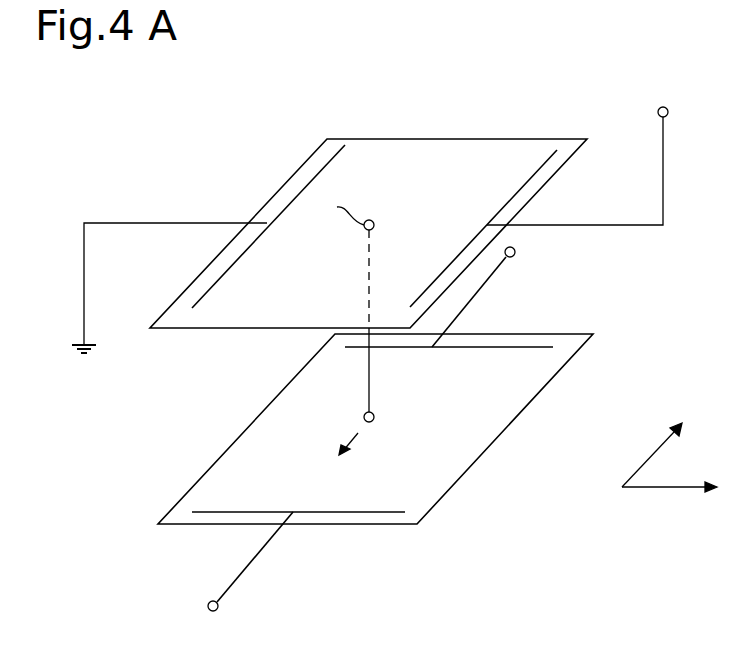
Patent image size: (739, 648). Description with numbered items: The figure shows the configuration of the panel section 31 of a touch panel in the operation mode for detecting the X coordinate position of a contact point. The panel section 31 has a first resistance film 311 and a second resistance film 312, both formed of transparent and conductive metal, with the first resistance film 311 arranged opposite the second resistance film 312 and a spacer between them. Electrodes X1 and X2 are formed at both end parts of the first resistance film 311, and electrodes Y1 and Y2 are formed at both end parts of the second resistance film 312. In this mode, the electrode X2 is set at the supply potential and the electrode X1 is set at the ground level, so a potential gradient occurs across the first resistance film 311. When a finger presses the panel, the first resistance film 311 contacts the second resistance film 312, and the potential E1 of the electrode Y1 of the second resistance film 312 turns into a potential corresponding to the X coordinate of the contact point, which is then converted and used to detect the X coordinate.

The panel section 31 is at (688, 30).
The first resistance film 311 is at (457, 148).
The second resistance film 312 is at (263, 430).
The electrode X1 is at (310, 178).
The electrode X2 is at (540, 172).
The electrode Y1 is at (367, 513).
The electrode Y2 is at (517, 338).
The potential of electrode Y1 E1 is at (245, 579).